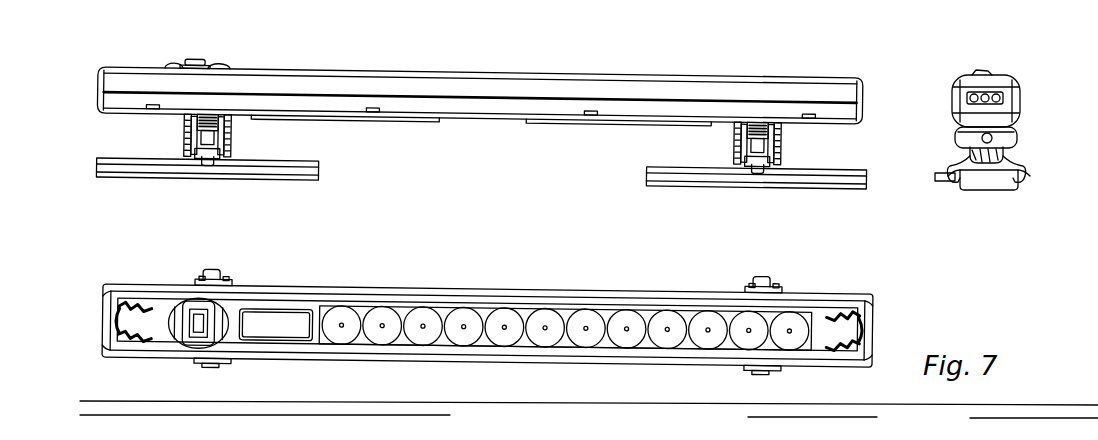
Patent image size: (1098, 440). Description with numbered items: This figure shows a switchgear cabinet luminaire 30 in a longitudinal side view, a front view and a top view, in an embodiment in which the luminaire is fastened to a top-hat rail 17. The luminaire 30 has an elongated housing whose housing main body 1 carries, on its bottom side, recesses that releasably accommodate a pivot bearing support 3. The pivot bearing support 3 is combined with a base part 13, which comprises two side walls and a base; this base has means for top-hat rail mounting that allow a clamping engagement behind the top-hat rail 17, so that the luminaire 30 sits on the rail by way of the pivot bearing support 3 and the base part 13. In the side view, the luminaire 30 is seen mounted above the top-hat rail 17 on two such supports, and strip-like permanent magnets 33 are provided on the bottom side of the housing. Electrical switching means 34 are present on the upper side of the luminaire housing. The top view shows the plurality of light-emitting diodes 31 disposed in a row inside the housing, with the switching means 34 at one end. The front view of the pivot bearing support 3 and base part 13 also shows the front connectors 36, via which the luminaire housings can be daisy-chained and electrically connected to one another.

The housing main body 1 is at (529, 191).
The switchgear cabinet luminaire 30 is at (864, 80).
The strip-like permanent magnets 33 is at (375, 127).
The top-hat rail 17 is at (313, 176).
The electrical switching means 34 is at (200, 59).
The front connectors 36 is at (957, 97).
The pivot bearing support 3 is at (962, 133).
The base part 13 is at (963, 157).
The light-emitting diodes 31 is at (390, 308).